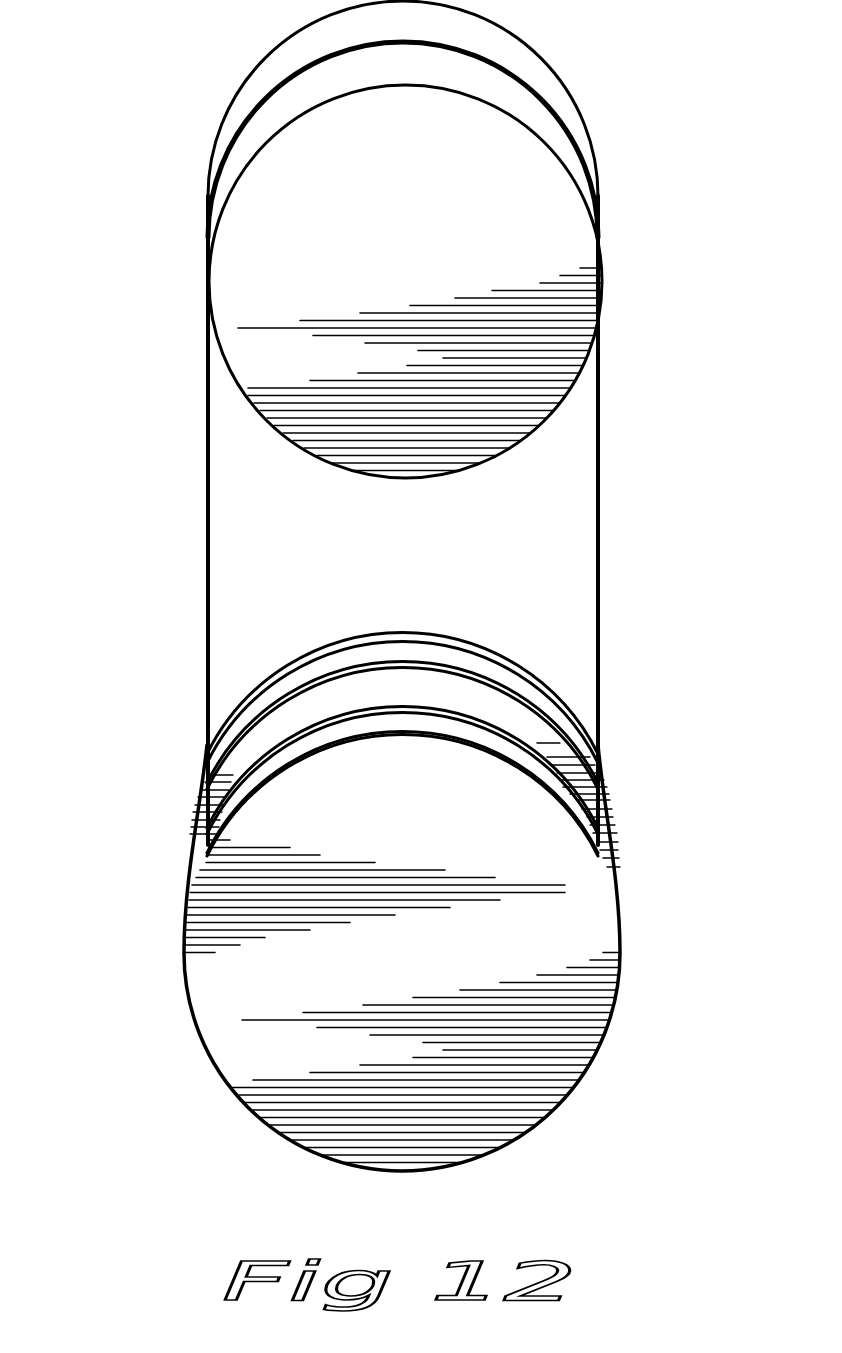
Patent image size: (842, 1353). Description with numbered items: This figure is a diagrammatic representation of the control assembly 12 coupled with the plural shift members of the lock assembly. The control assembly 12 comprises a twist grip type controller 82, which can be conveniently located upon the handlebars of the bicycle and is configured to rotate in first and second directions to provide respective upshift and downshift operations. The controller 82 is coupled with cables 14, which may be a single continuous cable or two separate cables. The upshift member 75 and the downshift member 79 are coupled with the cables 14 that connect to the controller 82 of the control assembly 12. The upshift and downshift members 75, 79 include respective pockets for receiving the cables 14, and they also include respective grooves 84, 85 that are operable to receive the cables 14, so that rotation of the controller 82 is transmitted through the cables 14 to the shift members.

The control assembly 12 is at (391, 586).
The cables 14 is at (208, 562).
The twist grip type controller 82 is at (525, 233).
The downshift member 79 is at (343, 632).
The groove 85 is at (424, 652).
The upshift member 75 is at (493, 716).
The groove 84 is at (290, 753).